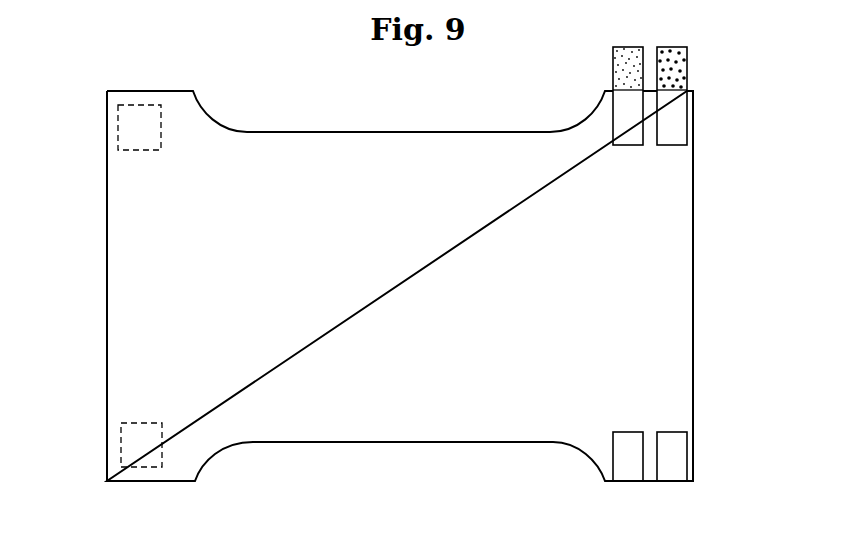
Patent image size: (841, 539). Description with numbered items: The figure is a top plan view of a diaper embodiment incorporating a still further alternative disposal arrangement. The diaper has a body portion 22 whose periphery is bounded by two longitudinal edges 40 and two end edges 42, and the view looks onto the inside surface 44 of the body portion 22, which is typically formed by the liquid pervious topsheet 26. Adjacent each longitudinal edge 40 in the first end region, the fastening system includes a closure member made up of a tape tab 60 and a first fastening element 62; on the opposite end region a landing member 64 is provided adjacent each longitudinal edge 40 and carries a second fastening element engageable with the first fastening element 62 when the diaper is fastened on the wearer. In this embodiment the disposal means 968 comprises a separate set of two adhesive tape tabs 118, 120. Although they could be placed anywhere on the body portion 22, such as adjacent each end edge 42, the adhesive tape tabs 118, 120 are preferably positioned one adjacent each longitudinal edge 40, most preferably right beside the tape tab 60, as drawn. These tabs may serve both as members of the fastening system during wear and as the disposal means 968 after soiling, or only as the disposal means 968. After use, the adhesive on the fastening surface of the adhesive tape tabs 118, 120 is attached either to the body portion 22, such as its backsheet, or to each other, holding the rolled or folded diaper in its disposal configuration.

The body portion 22 is at (284, 150).
The topsheet 26 is at (361, 147).
The longitudinal edges 40 is at (437, 131).
The end edges 42 is at (107, 253).
The inside surface 44 is at (366, 263).
The tape tab 60 is at (684, 57).
The first fastening element 62 is at (669, 49).
The landing member 64 is at (127, 121).
The adhesive tape tab 118 is at (620, 75).
The adhesive tape tab 120 is at (633, 476).
The disposal means 968 is at (625, 64).